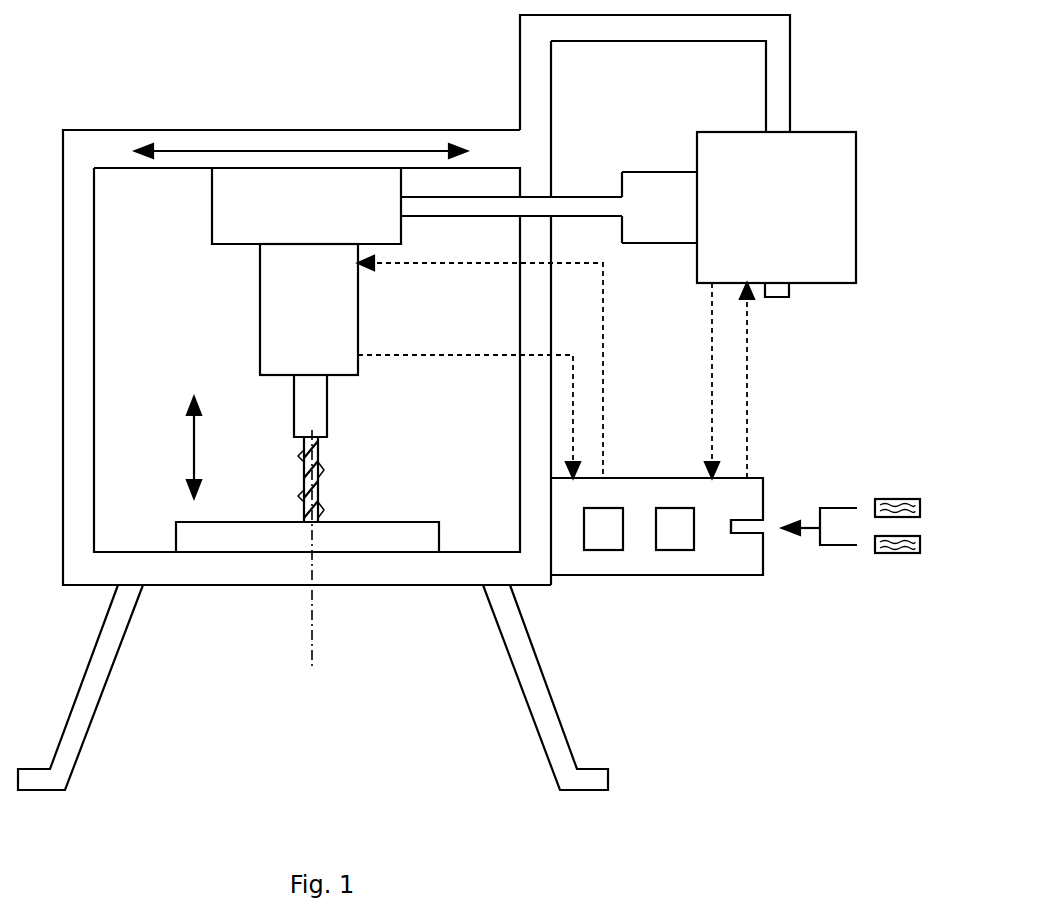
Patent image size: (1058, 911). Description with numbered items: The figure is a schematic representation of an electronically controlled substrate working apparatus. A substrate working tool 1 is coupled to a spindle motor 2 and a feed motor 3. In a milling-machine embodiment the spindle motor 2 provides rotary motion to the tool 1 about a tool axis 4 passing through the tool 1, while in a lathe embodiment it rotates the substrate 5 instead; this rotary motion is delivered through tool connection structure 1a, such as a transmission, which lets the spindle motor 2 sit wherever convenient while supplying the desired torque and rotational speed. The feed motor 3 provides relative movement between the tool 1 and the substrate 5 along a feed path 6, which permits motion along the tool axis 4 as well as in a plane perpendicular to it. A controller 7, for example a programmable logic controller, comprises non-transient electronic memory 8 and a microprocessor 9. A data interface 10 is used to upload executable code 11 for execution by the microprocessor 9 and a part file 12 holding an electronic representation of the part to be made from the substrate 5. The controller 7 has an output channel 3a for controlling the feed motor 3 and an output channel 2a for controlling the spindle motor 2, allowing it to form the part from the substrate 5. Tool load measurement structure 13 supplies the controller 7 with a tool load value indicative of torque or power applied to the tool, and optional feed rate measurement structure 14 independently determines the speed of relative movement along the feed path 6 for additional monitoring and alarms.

The substrate working tool 1 is at (313, 493).
The tool connection structure 1a is at (320, 423).
The spindle motor 2 is at (351, 323).
The output channel 2a is at (457, 264).
The feed motor 3 is at (848, 218).
The output channel 3a is at (748, 383).
The tool axis 4 is at (312, 647).
The substrate 5 is at (411, 530).
The feed path 6 is at (286, 150).
The controller 7 is at (732, 557).
The non-transient electronic memory 8 is at (602, 537).
The microprocessor 9 is at (673, 537).
The data interface 10 is at (753, 527).
The executable code 11 is at (895, 505).
The part file 12 is at (900, 550).
The tool load measurement structure 13 is at (455, 356).
The feed rate measurement structure 14 is at (712, 318).